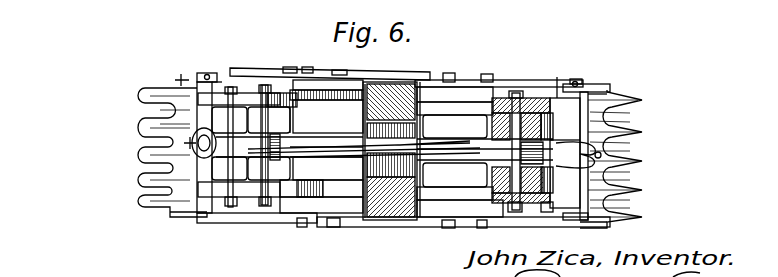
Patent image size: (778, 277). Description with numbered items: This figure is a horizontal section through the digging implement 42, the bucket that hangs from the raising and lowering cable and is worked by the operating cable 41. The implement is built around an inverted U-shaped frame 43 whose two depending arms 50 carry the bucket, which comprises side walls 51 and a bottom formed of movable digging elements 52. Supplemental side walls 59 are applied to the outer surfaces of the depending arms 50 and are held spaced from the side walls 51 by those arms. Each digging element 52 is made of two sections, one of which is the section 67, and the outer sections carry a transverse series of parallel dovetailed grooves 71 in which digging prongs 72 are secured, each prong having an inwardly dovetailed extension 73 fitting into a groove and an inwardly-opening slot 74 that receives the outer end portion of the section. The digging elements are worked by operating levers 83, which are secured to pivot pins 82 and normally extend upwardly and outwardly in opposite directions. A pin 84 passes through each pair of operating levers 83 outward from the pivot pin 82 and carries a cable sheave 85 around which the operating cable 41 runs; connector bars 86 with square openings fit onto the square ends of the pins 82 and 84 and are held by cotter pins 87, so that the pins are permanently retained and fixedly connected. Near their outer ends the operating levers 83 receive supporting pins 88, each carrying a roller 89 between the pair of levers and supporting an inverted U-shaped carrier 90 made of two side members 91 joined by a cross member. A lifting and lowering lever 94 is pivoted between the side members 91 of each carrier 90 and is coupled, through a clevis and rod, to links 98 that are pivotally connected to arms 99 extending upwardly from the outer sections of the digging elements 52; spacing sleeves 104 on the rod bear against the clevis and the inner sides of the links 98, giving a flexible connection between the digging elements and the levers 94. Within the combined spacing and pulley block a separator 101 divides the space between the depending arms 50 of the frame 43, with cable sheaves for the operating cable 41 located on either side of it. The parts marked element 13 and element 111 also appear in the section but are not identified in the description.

The adjusting cross pin 13 is at (181, 74).
The operating cable 41 is at (428, 147).
The digging implement 42 is at (400, 80).
The inverted U-shaped frame 43 is at (387, 222).
The depending arms 50 is at (420, 87).
The side walls 51 is at (462, 100).
The digging elements 52 is at (560, 85).
The supplemental side walls 59 is at (357, 74).
The digging element section 67 is at (622, 117).
The dovetailed grooves 71 is at (603, 100).
The digging prongs 72 is at (627, 99).
The dovetailed extensions 73 is at (617, 222).
The inwardly-opening slots 74 is at (150, 112).
The pivot pins 82 is at (458, 86).
The operating levers 83 is at (249, 105).
The pins 84 is at (487, 85).
The cable sheaves 85 is at (530, 105).
The connector bars 86 is at (316, 72).
The cotter pins 87 is at (279, 82).
The supporting pins 88 is at (633, 133).
The rollers 89 is at (637, 190).
The inverted U-shaped carrier 90 is at (512, 98).
The side members 91 is at (262, 92).
The lifting and lowering lever 94 is at (648, 148).
The links 98 is at (217, 80).
The arms 99 is at (206, 73).
The separator 101 is at (368, 166).
The spacing sleeves 104 is at (172, 82).
The spring element 111 is at (132, 113).